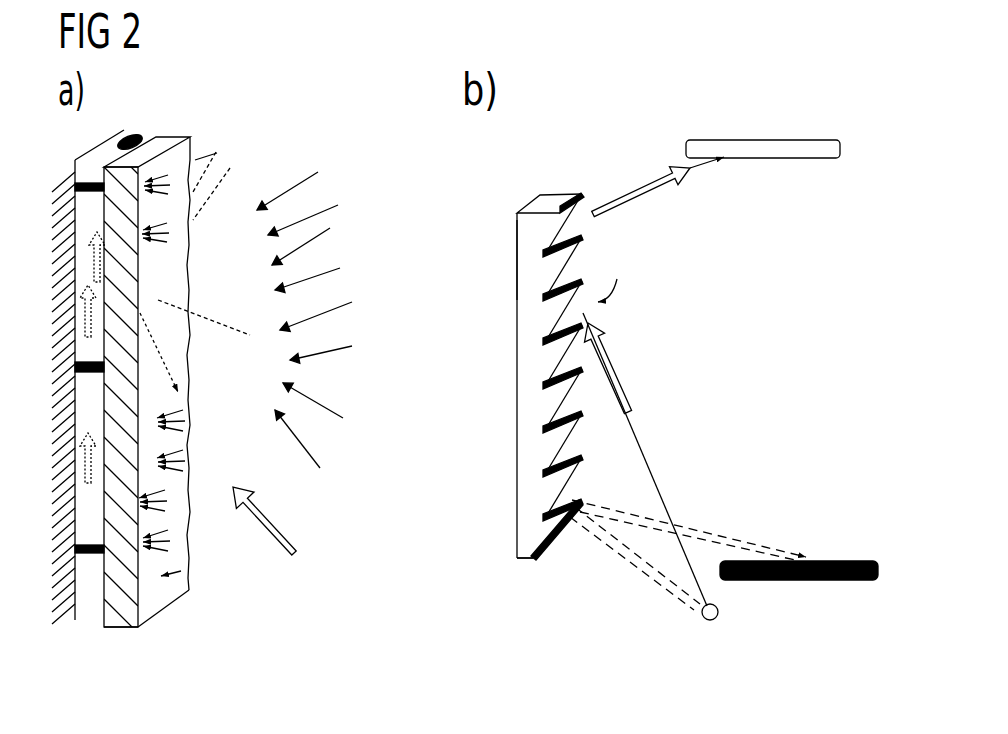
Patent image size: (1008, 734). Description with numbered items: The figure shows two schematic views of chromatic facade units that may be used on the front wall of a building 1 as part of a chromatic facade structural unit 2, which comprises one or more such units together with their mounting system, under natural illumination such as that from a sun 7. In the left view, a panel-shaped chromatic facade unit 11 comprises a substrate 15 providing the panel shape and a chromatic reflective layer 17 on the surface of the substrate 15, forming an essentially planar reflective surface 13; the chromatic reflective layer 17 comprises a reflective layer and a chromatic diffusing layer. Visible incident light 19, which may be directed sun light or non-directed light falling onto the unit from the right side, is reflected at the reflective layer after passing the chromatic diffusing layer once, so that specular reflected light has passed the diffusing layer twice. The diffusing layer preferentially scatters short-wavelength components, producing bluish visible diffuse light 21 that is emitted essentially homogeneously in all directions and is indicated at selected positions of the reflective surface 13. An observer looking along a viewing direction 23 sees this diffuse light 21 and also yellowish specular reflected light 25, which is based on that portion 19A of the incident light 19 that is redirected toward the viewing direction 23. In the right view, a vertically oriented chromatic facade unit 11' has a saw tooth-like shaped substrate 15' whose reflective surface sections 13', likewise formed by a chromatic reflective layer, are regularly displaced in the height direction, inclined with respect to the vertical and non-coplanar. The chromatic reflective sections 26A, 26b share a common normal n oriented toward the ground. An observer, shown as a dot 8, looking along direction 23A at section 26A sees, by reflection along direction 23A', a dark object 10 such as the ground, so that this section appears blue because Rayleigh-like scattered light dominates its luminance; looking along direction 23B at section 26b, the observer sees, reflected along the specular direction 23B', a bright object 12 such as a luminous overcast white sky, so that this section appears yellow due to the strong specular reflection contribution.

The building 1 is at (510, 340).
The chromatic facade structural unit 2 is at (75, 626).
The sun 7 is at (517, 263).
The dot representing observer 8 is at (718, 612).
The dark object 10 is at (845, 562).
The chromatic facade unit 11 is at (157, 117).
The chromatic facade unit 11' is at (573, 185).
The bright object 12 is at (790, 160).
The planar reflective surface 13 is at (171, 385).
The reflective surface sections 13' is at (591, 399).
The substrate 15 is at (129, 660).
The saw tooth-like shaped substrate 15' is at (526, 580).
The chromatic reflective layer 17 is at (157, 597).
The visible incident light 19 is at (300, 281).
The portion of incident light 19A is at (215, 160).
The visible diffuse light 21 is at (157, 177).
The viewing direction 23 is at (273, 523).
The direction 23A is at (635, 562).
The direction 23A' is at (689, 514).
The direction 23B is at (645, 459).
The direction of specular reflection 23B' is at (658, 209).
The specular reflected light 25 is at (190, 345).
The chromatic reflective section 26A is at (590, 483).
The chromatic reflective section 26b is at (587, 198).
The normal n is at (613, 275).